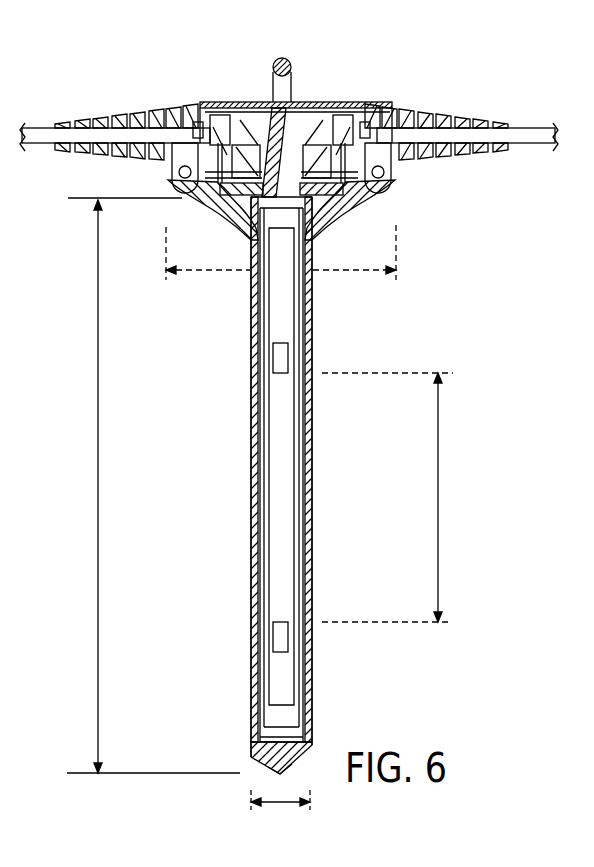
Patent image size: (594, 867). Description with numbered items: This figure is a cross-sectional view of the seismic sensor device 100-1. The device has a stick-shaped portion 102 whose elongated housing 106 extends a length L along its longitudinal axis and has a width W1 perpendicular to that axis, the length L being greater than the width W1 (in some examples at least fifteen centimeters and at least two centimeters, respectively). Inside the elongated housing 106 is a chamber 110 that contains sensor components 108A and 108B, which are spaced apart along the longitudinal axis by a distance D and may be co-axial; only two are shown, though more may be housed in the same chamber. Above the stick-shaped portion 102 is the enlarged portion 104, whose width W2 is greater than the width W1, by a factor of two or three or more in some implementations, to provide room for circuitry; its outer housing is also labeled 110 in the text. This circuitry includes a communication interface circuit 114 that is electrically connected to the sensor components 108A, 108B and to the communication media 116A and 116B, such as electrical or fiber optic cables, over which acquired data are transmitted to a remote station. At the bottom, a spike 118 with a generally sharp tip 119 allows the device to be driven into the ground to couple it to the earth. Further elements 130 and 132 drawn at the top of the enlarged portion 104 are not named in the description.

The seismic sensor device 100-1 is at (373, 48).
The stick-shaped portion 102 is at (318, 510).
The enlarged portion 104 is at (378, 197).
The elongated housing 106 is at (313, 428).
The sensor component 108A is at (276, 358).
The sensor component 108B is at (277, 640).
The chamber 110 is at (205, 200).
The communication interface circuit 114 is at (347, 150).
The communication medium 116A is at (40, 133).
The communication medium 116B is at (534, 132).
The spike 118 is at (262, 757).
The tip 119 is at (280, 773).
The actuator pin 130 is at (282, 57).
The plunger 132 is at (236, 100).
The length L is at (148, 485).
The distance D is at (399, 497).
The width W1 is at (283, 804).
The width W2 is at (212, 272).